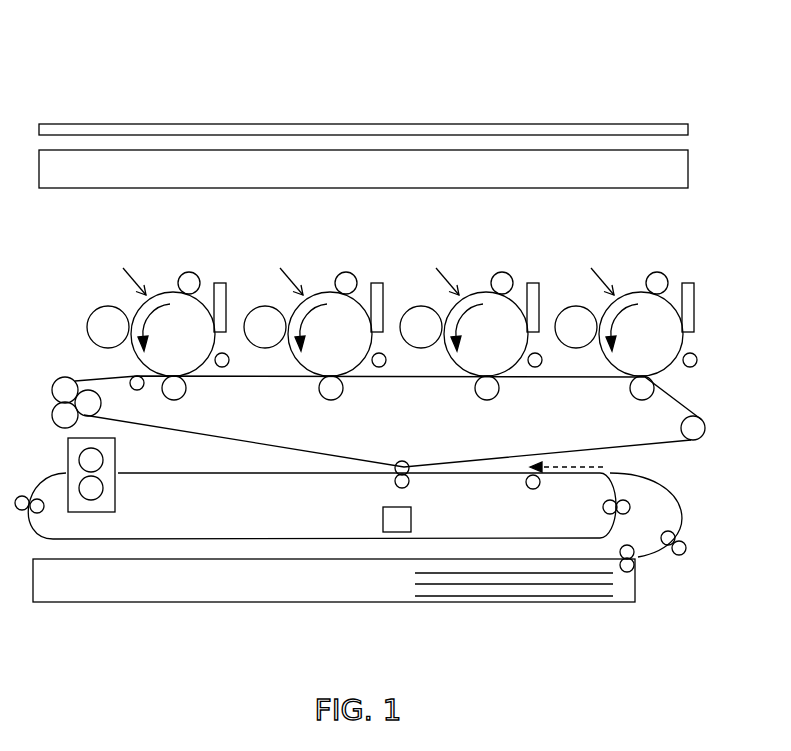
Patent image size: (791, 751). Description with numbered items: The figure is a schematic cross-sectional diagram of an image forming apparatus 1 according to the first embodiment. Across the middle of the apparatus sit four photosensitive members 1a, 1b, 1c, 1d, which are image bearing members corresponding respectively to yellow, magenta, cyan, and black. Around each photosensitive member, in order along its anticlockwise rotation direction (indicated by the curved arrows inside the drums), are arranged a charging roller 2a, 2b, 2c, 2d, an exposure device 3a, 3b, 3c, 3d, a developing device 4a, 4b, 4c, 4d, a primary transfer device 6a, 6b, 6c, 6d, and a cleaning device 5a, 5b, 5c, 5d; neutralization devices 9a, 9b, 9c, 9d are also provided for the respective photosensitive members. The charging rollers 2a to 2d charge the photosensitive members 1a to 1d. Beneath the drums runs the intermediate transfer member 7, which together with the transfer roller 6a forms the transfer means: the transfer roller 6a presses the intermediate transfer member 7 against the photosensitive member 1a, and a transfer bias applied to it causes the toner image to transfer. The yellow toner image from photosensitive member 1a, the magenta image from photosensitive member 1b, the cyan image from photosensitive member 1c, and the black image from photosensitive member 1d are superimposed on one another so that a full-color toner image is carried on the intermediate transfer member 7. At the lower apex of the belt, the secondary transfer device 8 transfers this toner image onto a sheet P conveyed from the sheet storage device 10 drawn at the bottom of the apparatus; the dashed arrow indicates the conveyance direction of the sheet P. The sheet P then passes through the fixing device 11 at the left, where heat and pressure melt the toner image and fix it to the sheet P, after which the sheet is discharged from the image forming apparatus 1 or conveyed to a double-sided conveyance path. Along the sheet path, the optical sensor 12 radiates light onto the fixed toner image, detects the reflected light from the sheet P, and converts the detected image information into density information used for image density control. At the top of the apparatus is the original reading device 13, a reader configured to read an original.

The image forming apparatus 1 is at (415, 76).
The photosensitive member 1a is at (173, 334).
The photosensitive member 1b is at (330, 334).
The photosensitive member 1c is at (486, 334).
The photosensitive member 1d is at (641, 334).
The charging roller 2a is at (190, 272).
The charging roller 2b is at (347, 272).
The charging roller 2c is at (503, 272).
The charging roller 2d is at (658, 272).
The exposure device 3a is at (135, 270).
The exposure device 3b is at (291, 270).
The exposure device 3c is at (448, 270).
The exposure device 3d is at (602, 270).
The developing device 4a is at (108, 327).
The developing device 4b is at (265, 327).
The developing device 4c is at (421, 327).
The developing device 4d is at (576, 327).
The cleaning device 5a is at (221, 282).
The cleaning device 5b is at (378, 282).
The cleaning device 5c is at (534, 282).
The cleaning device 5d is at (689, 282).
The primary transfer device 6a is at (185, 396).
The primary transfer device 6b is at (342, 396).
The primary transfer device 6c is at (498, 396).
The primary transfer device 6d is at (636, 397).
The intermediate transfer member 7 is at (664, 445).
The secondary transfer device 8 is at (406, 464).
The neutralization device 9a is at (229, 360).
The neutralization device 9b is at (386, 360).
The neutralization device 9c is at (542, 360).
The neutralization device 9d is at (697, 356).
The sheet storage device 10 is at (574, 602).
The fixing device 11 is at (116, 495).
The optical sensor 12 is at (412, 523).
The original reading device 13 is at (691, 165).
The recording material (sheet) P is at (426, 600).